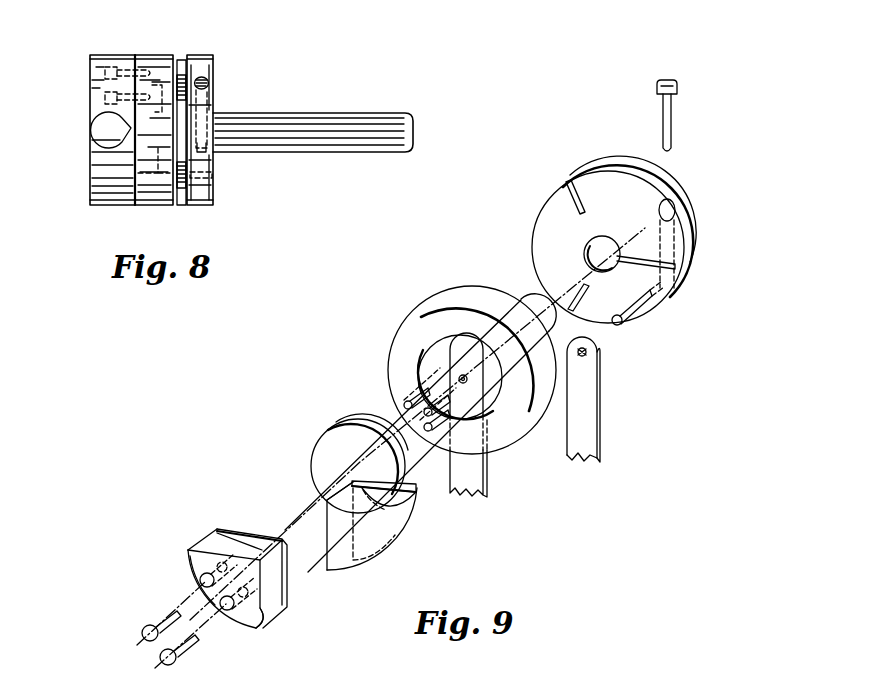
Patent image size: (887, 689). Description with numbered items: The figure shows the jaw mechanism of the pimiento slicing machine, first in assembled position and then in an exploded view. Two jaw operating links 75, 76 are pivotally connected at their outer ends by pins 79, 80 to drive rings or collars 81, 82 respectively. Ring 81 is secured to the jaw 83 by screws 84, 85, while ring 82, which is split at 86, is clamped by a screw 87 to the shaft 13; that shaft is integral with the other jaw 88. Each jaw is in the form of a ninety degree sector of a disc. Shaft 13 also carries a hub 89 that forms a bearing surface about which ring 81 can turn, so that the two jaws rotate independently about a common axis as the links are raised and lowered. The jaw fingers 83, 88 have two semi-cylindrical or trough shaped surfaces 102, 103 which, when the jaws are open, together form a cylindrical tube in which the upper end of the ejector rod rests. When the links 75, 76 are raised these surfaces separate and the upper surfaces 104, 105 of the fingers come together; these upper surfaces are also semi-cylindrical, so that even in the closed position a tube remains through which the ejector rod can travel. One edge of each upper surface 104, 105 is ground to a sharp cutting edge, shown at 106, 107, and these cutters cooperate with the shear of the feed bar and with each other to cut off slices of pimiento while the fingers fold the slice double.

In FIG. 8, the shaft 13 is at (313, 115).
In FIG. 9, the shaft 13 is at (525, 288).
In FIG. 8, the jaw operating link 75 is at (182, 75).
In FIG. 9, the jaw operating link 75 is at (480, 473).
In FIG. 8, the jaw operating link 76 is at (180, 205).
In FIG. 9, the jaw operating link 76 is at (590, 453).
In FIG. 8, the pin 79 is at (177, 82).
In FIG. 9, the pin 79 is at (430, 390).
In FIG. 8, the pin 80 is at (210, 177).
In FIG. 9, the pin 80 is at (630, 318).
In FIG. 8, the drive ring 81 is at (147, 205).
In FIG. 9, the drive ring 81 is at (397, 340).
In FIG. 8, the drive ring 82 is at (203, 53).
In FIG. 9, the drive ring 82 is at (535, 222).
In FIG. 8, the jaw 83 is at (90, 115).
In FIG. 9, the jaw 83 is at (188, 563).
In FIG. 8, the screw 84 is at (107, 78).
In FIG. 9, the screw 84 is at (142, 633).
In FIG. 8, the screw 85 is at (105, 100).
In FIG. 9, the screw 85 is at (160, 653).
In FIG. 9, the split 86 is at (683, 258).
In FIG. 9, the screw 87 is at (675, 140).
In FIG. 8, the jaw 88 is at (90, 180).
In FIG. 9, the jaw 88 is at (390, 540).
In FIG. 9, the hub 89 is at (313, 447).
In FIG. 9, the semi-cylindrical surface 102 is at (273, 613).
In FIG. 9, the semi-cylindrical surface 103 is at (340, 495).
In FIG. 9, the upper surface 104 is at (213, 545).
In FIG. 9, the upper surface 105 is at (395, 500).
In FIG. 9, the cutting edge 106 is at (233, 532).
In FIG. 9, the cutting edge 107 is at (400, 523).